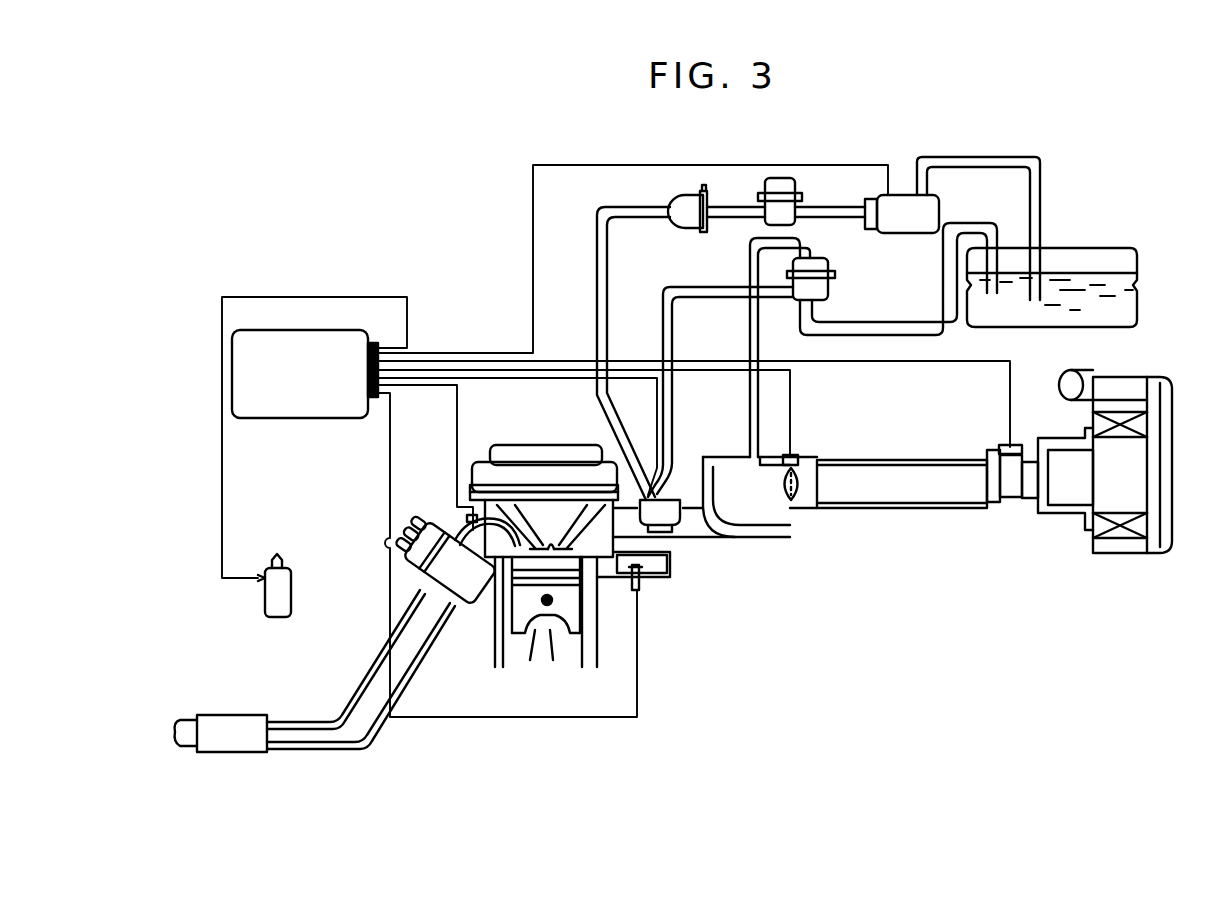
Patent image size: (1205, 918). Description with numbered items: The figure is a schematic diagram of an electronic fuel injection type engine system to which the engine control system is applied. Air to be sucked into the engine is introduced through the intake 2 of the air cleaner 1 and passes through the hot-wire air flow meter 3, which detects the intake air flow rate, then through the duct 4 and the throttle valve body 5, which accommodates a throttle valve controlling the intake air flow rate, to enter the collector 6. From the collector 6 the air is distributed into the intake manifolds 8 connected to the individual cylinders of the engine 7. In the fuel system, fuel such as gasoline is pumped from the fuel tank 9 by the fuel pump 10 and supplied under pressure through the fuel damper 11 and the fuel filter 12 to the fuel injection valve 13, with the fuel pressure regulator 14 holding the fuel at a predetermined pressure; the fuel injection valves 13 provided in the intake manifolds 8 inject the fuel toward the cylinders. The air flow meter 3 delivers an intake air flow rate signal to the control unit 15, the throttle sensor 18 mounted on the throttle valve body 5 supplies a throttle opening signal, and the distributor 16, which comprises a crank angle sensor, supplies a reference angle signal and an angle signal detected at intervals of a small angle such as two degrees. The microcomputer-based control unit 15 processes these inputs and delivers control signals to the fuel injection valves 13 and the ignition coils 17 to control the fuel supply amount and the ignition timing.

The air cleaner 1 is at (1160, 556).
The intake 2 is at (1077, 375).
The hot-wire air flow meter 3 is at (1002, 446).
The duct 4 is at (912, 510).
The throttle valve body 5 is at (796, 503).
The collector 6 is at (720, 462).
The engine 7 is at (527, 445).
The intake manifolds 8 is at (655, 543).
The fuel tank 9 is at (1106, 265).
The fuel pump 10 is at (904, 192).
The fuel damper 11 is at (792, 185).
The fuel filter 12 is at (682, 220).
The fuel injection valve 13 is at (700, 505).
The fuel pressure regulator 14 is at (830, 288).
The control unit 15 is at (300, 419).
The distributor 16 is at (430, 518).
The ignition coils 17 is at (290, 605).
The throttle sensor 18 is at (798, 457).